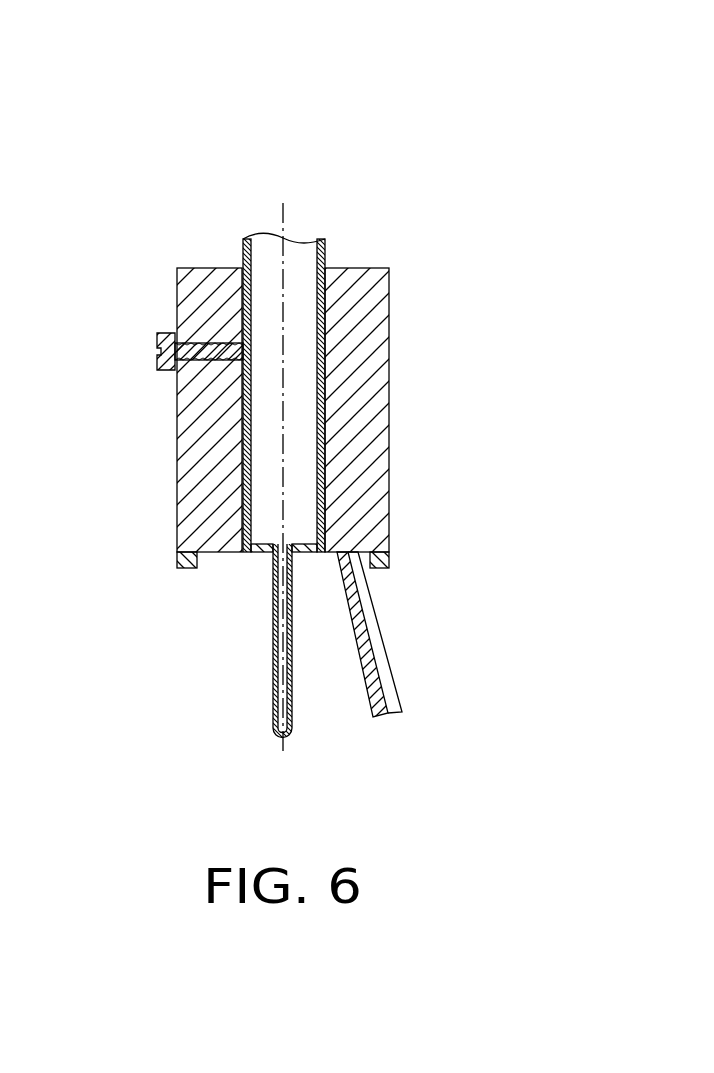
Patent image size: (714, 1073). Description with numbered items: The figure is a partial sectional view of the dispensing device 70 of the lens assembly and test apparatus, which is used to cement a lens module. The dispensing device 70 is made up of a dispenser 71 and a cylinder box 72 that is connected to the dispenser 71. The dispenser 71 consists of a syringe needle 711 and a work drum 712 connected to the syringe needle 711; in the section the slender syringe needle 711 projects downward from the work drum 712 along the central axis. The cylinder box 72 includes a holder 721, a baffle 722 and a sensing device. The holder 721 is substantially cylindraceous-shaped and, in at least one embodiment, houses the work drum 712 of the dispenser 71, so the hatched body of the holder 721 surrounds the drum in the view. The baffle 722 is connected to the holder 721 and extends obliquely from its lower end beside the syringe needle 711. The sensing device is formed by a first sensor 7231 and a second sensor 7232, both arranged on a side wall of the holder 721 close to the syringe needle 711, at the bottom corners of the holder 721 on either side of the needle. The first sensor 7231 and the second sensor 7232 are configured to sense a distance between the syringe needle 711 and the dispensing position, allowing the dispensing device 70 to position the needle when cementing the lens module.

The dispensing device 70 is at (277, 58).
The dispenser 71 is at (150, 580).
The syringe needle 711 is at (275, 677).
The work drum 712 is at (258, 553).
The cylinder box 72 is at (367, 260).
The holder 721 is at (378, 337).
The baffle 722 is at (373, 685).
The first sensor 7231 is at (177, 556).
The second sensor 7232 is at (390, 557).